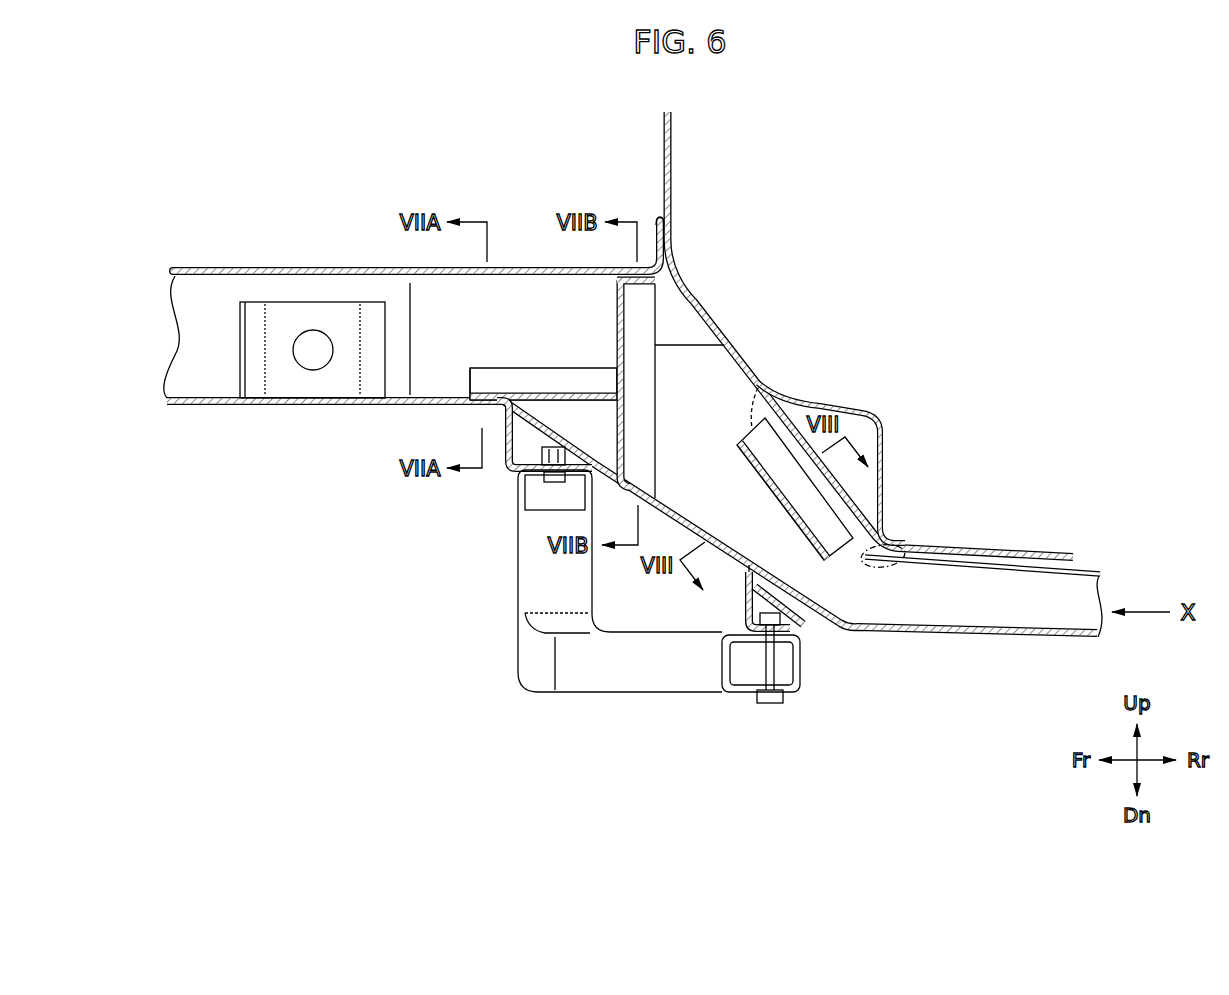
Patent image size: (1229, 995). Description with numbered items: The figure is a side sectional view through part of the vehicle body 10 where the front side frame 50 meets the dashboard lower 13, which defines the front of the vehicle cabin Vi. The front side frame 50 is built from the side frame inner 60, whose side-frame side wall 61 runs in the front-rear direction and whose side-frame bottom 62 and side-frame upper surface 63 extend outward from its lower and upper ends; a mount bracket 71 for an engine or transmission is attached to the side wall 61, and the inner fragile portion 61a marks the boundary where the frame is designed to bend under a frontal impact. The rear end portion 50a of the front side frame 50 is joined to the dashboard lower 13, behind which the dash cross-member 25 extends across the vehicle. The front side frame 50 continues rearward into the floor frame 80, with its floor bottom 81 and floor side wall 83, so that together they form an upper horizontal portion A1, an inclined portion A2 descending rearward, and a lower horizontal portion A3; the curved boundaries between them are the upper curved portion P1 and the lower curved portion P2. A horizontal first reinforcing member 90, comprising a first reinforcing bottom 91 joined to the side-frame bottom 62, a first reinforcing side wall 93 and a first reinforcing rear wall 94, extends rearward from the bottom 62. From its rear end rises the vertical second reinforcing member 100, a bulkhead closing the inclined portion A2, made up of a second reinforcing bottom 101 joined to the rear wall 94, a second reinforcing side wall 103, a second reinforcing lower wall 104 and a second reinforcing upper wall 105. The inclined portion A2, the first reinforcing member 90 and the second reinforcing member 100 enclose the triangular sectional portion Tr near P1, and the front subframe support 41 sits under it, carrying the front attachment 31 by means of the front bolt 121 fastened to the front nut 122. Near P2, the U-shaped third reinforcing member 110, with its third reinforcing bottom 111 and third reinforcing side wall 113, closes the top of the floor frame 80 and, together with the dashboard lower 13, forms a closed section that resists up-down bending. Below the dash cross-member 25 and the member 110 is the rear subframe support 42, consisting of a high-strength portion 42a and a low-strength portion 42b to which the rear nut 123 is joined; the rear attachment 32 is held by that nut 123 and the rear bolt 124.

The vehicle body 10 is at (972, 235).
The dashboard lower 13 is at (672, 158).
The dash cross-member 25 is at (872, 414).
The front attachment 31 is at (517, 507).
The rear attachment 32 is at (802, 663).
The front subframe support 41 is at (507, 455).
The rear subframe support 42 is at (721, 673).
The high-strength portion 42a is at (742, 585).
The low-strength portion 42b is at (745, 612).
The front side frame 50 is at (416, 246).
The rear end portion 50a is at (660, 218).
The side frame inner 60 is at (236, 264).
The side-frame side wall 61 is at (190, 322).
The inner fragile portion 61a is at (408, 290).
The side-frame bottom 62 is at (207, 400).
The side-frame upper surface 63 is at (274, 280).
The mount bracket 71 is at (300, 392).
The floor frame 80 is at (976, 588).
The floor bottom 81 is at (953, 632).
The floor side wall 83 is at (1023, 598).
The first reinforcing member 90 is at (633, 397).
The first reinforcing bottom 91 is at (473, 386).
The first reinforcing side wall 93 is at (498, 377).
The first reinforcing rear wall 94 is at (590, 386).
The second reinforcing member 100 is at (672, 328).
The second reinforcing bottom 101 is at (613, 327).
The second reinforcing side wall 103 is at (657, 370).
The second reinforcing lower wall 104 is at (640, 475).
The second reinforcing upper wall 105 is at (632, 283).
The third reinforcing member 110 is at (760, 384).
The third reinforcing bottom 111 is at (777, 500).
The third reinforcing side wall 113 is at (818, 507).
The front bolt 121 is at (553, 482).
The front nut 122 is at (518, 503).
The rear nut 123 is at (800, 634).
The rear bolt 124 is at (772, 705).
The upper curved portion P1 is at (497, 408).
The lower curved portion P2 is at (893, 555).
The upper horizontal portion A1 is at (500, 335).
The inclined portion A2 is at (690, 437).
The lower horizontal portion A3 is at (934, 599).
The triangular sectional portion Tr is at (572, 432).
The vehicle cabin Vi is at (1014, 347).